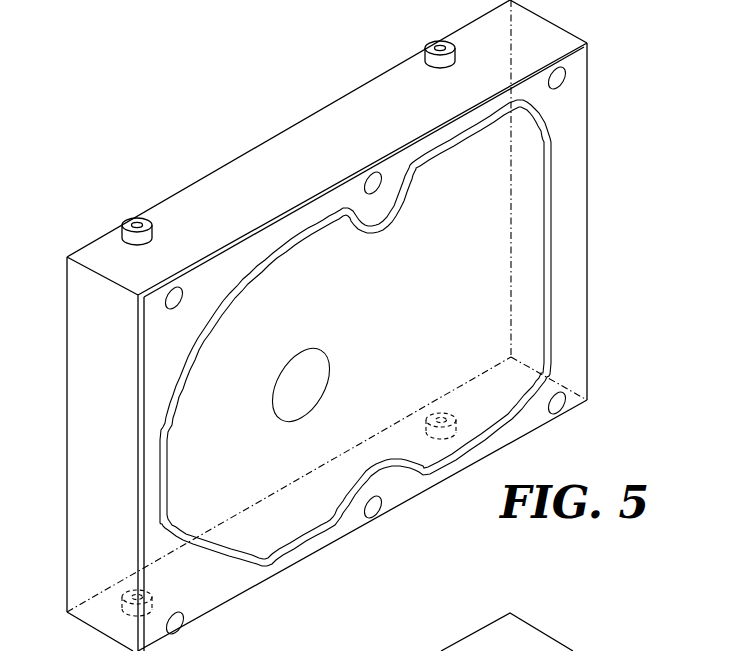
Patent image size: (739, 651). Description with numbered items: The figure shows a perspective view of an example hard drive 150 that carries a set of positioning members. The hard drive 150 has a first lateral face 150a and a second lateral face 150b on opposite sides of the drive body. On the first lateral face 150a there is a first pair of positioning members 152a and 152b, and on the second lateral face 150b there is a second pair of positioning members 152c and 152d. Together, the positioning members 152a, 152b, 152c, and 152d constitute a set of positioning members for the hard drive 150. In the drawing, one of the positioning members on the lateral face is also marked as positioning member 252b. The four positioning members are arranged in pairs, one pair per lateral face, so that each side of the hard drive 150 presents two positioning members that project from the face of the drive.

The hard disk drive housing 150 is at (134, 126).
The first side surface of housing 150a is at (364, 172).
The second side surface of housing 150b is at (362, 474).
The first mounting boss 152a is at (122, 223).
The second mounting boss 152b is at (425, 47).
The third mounting boss 152c is at (134, 592).
The fourth mounting boss 152d is at (430, 414).
The bracket projection 252b is at (438, 650).